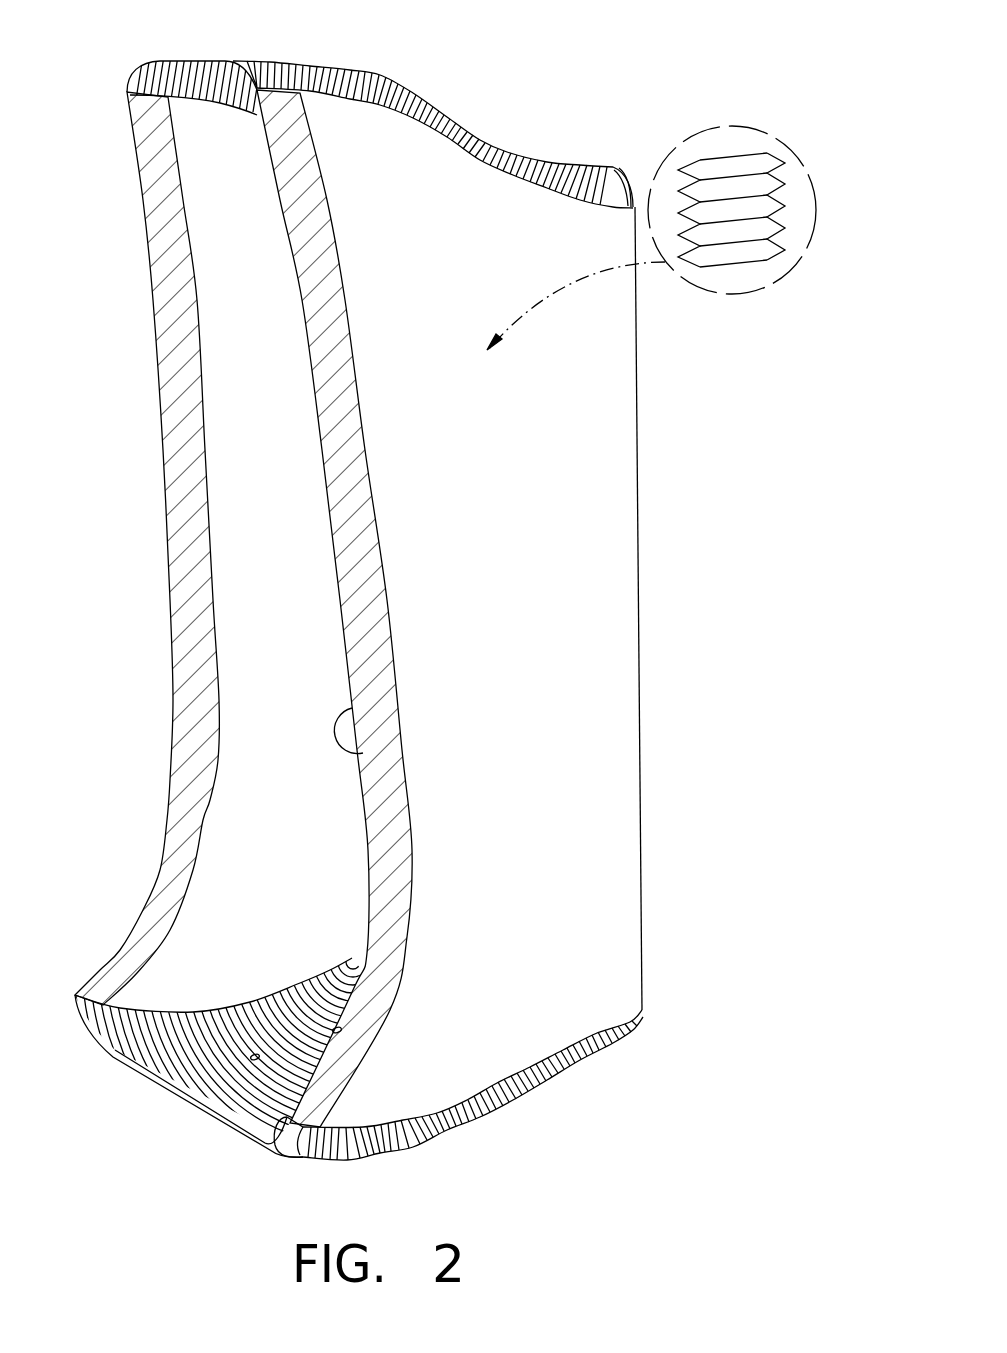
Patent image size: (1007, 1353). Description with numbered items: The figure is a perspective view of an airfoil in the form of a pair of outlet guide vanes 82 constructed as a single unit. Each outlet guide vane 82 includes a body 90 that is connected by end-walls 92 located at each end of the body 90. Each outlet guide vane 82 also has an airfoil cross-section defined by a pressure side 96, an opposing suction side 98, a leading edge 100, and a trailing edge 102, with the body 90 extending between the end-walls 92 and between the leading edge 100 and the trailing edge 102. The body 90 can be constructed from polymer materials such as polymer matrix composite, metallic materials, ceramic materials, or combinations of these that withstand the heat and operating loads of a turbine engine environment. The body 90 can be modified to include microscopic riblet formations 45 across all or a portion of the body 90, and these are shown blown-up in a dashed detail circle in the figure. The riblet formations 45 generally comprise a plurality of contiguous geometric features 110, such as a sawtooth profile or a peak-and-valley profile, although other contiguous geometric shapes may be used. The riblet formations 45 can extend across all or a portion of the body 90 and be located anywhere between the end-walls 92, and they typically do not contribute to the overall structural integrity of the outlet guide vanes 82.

The riblet formations 45 is at (750, 150).
The outlet guide vanes 82 is at (315, 352).
The body 90 is at (560, 357).
The end-walls 92 is at (200, 62).
The pressure side 96 is at (555, 553).
The suction side 98 is at (370, 752).
The leading edge 100 is at (360, 555).
The trailing edge 102 is at (645, 480).
The contiguous geometric features 110 is at (765, 178).